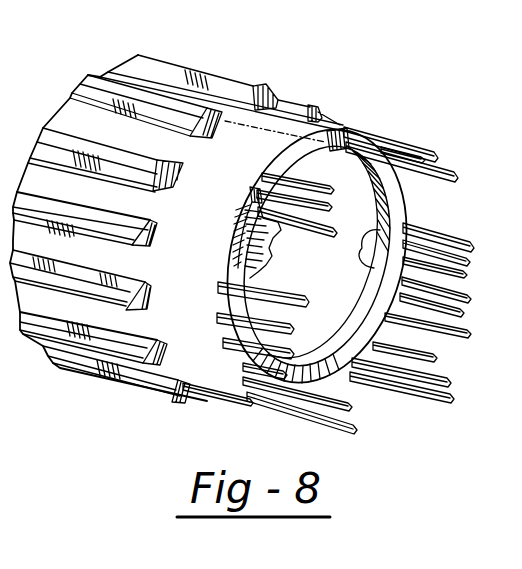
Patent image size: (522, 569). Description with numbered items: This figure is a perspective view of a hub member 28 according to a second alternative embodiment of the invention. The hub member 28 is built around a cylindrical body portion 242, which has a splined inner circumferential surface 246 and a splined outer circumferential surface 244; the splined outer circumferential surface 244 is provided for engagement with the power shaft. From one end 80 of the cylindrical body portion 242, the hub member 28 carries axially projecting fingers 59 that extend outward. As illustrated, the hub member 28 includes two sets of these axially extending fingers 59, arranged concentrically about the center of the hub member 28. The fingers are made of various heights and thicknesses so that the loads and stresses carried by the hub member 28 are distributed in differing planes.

The hub member 28 is at (297, 84).
The cylindrical body portion 242 is at (341, 128).
The splined outer circumferential surface 244 is at (190, 348).
The splined inner circumferential surface 246 is at (376, 240).
The axially projecting fingers 59 is at (451, 173).
The end of the cylindrical body portion 80 is at (227, 257).